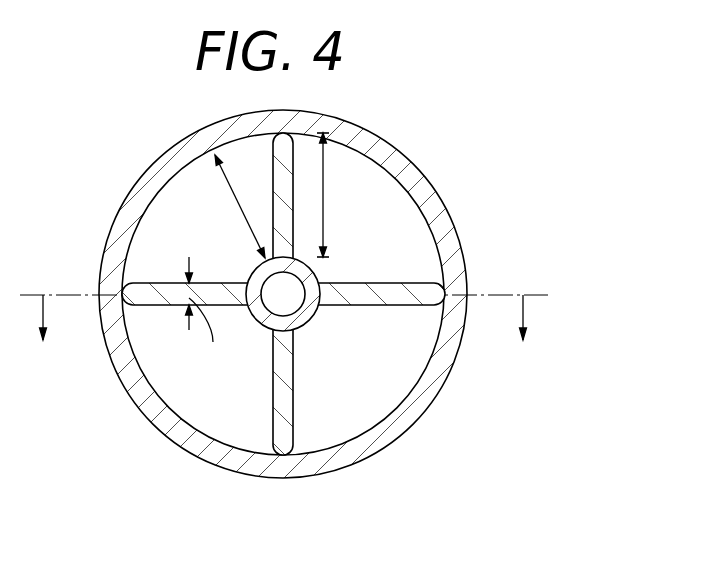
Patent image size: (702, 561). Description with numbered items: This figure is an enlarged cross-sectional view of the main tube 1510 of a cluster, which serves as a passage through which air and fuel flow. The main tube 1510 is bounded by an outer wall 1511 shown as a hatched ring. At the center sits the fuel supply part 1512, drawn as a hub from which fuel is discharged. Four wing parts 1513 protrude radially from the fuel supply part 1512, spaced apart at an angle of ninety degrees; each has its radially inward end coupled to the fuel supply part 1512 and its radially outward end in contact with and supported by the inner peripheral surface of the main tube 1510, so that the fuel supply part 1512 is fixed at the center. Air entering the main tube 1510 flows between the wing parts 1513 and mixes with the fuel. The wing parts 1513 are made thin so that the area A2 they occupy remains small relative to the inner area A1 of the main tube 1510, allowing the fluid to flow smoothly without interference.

The main tube 1510 is at (88, 106).
The outer wall 1511 is at (402, 164).
The fuel supply part 1512 is at (272, 323).
The wing part 1513 is at (350, 297).
The inner area of the main tube A1 is at (413, 242).
The area occupied by the wing parts A2 is at (425, 302).